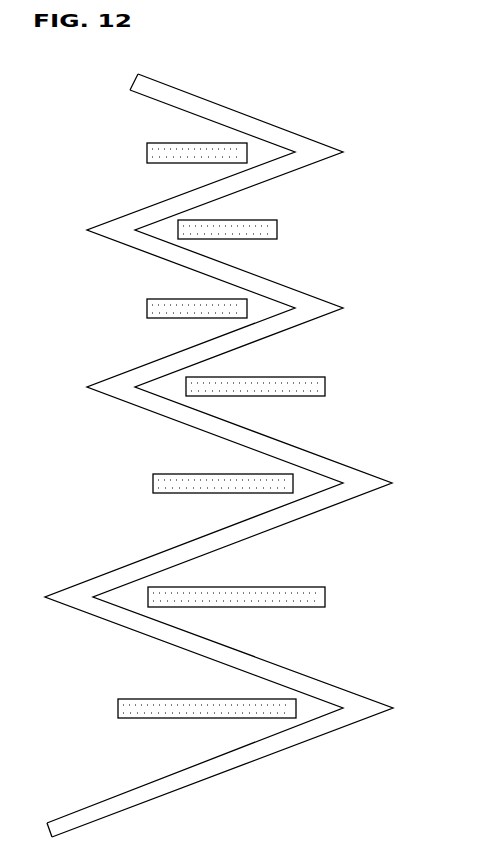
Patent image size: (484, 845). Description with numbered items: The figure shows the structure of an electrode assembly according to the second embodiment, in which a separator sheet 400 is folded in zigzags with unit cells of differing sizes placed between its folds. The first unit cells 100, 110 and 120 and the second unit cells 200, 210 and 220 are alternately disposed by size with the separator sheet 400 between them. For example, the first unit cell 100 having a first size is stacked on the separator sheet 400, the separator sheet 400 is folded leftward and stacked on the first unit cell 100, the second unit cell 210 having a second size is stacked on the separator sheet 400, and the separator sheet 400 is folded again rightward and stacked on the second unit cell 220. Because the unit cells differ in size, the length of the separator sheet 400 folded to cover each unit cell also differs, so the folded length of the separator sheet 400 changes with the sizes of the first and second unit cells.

The separator sheet 400 is at (238, 110).
The first unit cell 100 is at (147, 149).
The first unit cell 110 is at (153, 481).
The first unit cell 120 is at (118, 705).
The second unit cell 200 is at (277, 229).
The second unit cell 210 is at (325, 386).
The second unit cell 220 is at (325, 597).